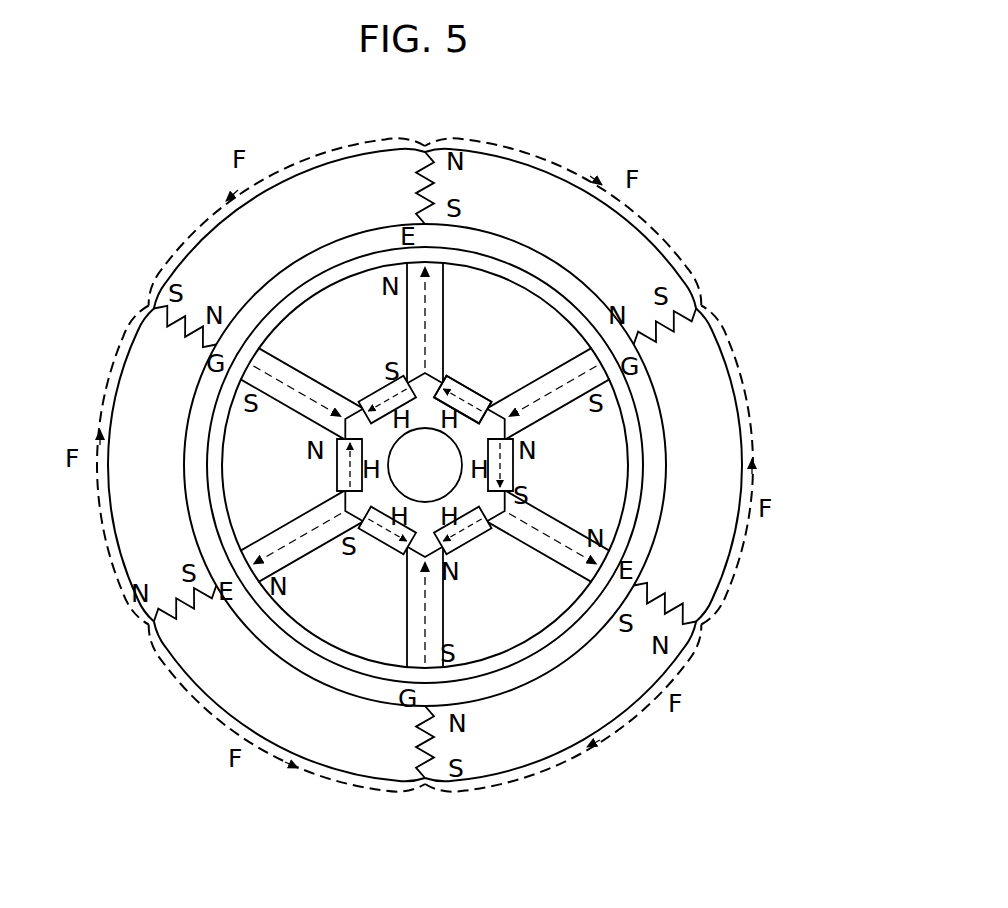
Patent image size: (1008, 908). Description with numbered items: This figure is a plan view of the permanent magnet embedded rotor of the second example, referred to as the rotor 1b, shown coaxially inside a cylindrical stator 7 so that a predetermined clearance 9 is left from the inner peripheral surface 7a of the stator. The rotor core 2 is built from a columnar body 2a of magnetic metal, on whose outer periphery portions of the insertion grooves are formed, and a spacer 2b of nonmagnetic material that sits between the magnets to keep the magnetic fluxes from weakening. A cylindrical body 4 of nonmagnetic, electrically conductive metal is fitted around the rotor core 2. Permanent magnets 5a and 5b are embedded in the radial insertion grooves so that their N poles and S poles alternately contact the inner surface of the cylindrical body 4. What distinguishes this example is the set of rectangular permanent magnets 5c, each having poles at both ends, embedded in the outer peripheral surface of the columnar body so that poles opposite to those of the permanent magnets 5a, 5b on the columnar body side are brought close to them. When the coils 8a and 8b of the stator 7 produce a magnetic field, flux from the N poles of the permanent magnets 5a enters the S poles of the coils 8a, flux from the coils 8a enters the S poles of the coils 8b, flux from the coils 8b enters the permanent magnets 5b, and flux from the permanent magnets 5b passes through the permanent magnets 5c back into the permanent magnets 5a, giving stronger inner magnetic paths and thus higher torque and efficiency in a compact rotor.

The rotor 1b is at (650, 490).
The rotor core 2 is at (522, 605).
The columnar body 2a is at (454, 538).
The spacer 2b is at (546, 600).
The cylindrical body 4 is at (322, 284).
The permanent magnet 5a is at (448, 277).
The permanent magnet 5b is at (272, 356).
The permanent magnet 5c is at (464, 372).
The stator 7 is at (546, 154).
The inner peripheral surface 7a is at (194, 502).
The coil 8a is at (400, 189).
The coil 8b is at (182, 334).
The clearance 9 is at (668, 418).